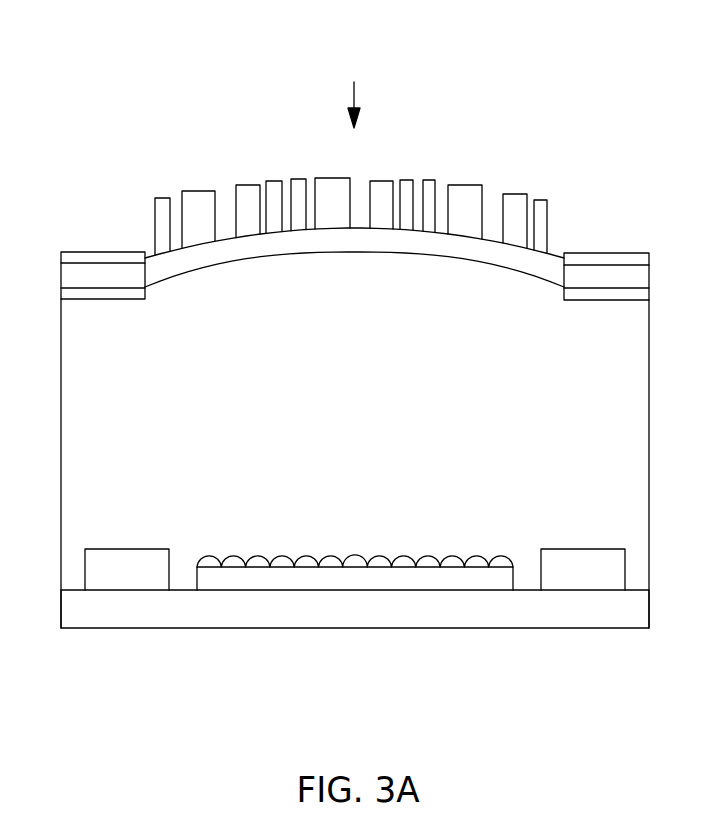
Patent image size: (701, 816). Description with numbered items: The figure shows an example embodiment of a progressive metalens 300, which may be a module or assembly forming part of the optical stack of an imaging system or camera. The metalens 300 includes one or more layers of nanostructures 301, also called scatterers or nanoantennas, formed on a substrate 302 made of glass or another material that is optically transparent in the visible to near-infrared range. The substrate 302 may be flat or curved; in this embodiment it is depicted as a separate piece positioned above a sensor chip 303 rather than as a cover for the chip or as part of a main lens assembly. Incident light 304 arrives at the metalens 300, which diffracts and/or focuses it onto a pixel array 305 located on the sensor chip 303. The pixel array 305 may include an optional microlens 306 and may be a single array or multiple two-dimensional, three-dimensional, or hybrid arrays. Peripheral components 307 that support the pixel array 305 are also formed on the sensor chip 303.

The progressive metalens 300 is at (95, 90).
The nanostructures 301 is at (250, 197).
The substrate 302 is at (249, 250).
The sensor chip 303 is at (272, 608).
The incident light 304 is at (354, 91).
The pixel array 305 is at (422, 579).
The microlens 306 is at (258, 555).
The peripheral components 307 is at (120, 578).